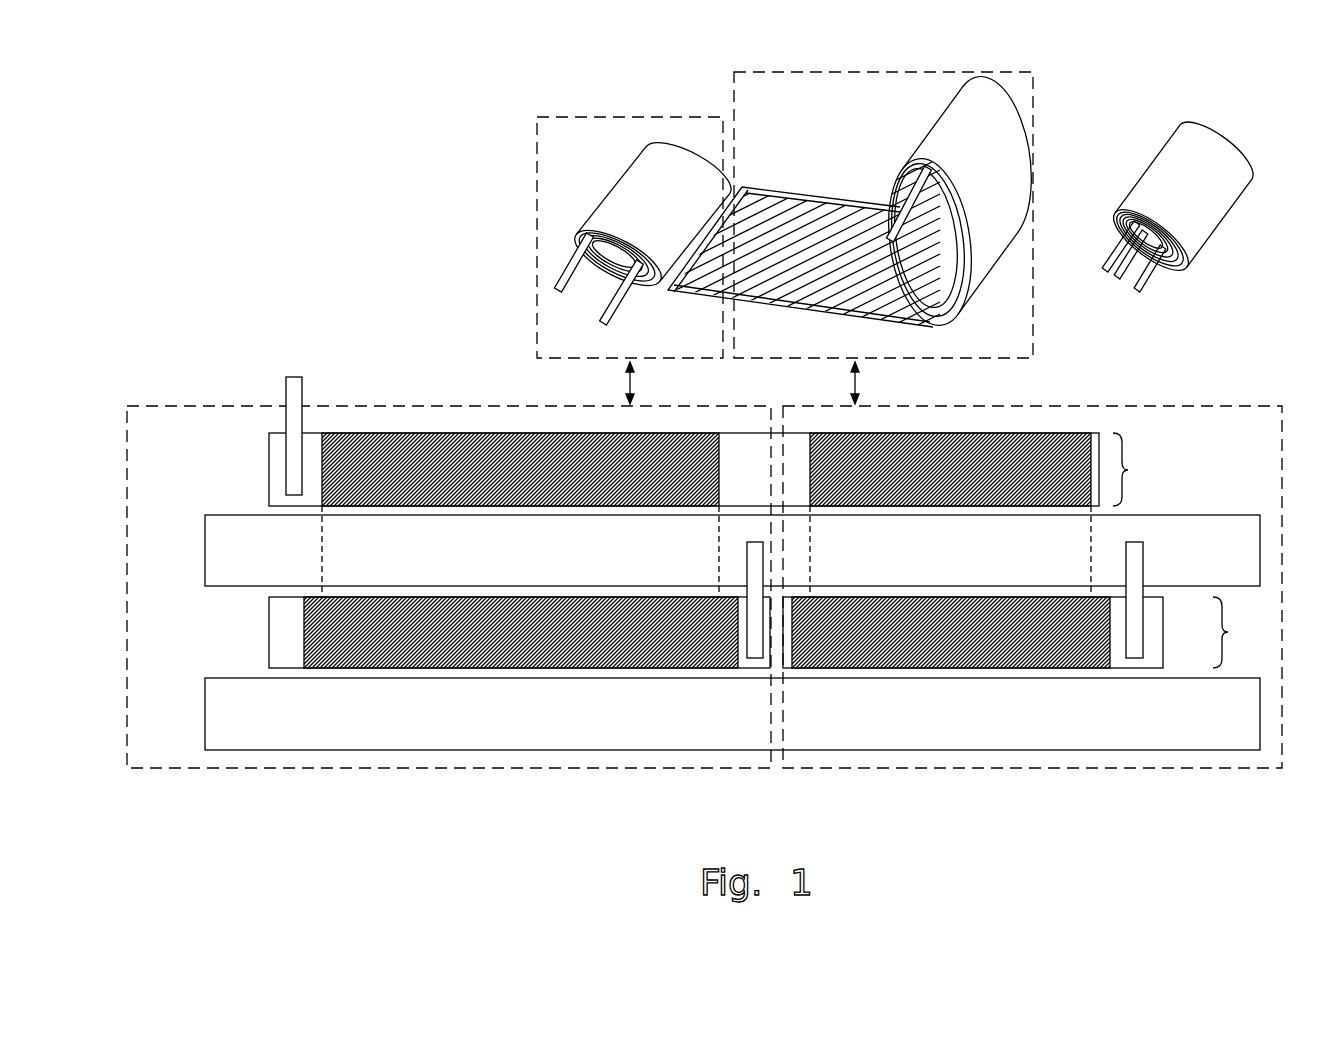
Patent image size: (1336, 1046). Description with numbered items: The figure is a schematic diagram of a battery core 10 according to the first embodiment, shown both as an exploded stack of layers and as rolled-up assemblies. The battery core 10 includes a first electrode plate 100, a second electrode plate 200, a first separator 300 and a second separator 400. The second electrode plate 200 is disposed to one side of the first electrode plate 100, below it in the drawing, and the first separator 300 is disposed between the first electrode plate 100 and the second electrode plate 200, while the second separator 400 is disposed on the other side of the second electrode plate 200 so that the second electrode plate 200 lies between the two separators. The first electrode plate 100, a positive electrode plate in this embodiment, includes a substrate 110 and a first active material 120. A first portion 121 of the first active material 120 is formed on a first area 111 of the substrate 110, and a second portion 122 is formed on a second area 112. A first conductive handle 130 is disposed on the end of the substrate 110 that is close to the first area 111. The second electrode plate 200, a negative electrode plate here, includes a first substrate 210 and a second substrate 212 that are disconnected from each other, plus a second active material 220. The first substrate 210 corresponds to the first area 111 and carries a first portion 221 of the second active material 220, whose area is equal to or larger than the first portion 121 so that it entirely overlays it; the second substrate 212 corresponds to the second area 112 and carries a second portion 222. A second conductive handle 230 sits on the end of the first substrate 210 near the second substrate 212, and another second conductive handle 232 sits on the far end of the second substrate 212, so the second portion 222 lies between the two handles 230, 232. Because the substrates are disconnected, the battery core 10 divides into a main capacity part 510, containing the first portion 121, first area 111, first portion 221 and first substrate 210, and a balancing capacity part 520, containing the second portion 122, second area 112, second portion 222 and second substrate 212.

The battery core 10 is at (1215, 203).
The first electrode plate 100 is at (675, 323).
The substrate 110 is at (277, 475).
The first area 111 is at (520, 424).
The second area 112 is at (978, 424).
The first active material 120 is at (734, 424).
The first portion of the first active material 121 is at (368, 433).
The second portion of the first active material 122 is at (1053, 433).
The first conductive handle 130 is at (295, 392).
The second electrode plate 200 is at (725, 484).
The first substrate 210 is at (277, 633).
The second substrate 212 is at (1158, 608).
The second active material 220 is at (707, 713).
The first portion of the second active material 221 is at (398, 668).
The second portion of the second active material 222 is at (905, 668).
The second conductive handle 230 is at (750, 563).
The another second conductive handle 232 is at (1130, 563).
The first separator 300 is at (225, 525).
The second separator 400 is at (225, 688).
The main capacity part 510 is at (537, 140).
The balancing capacity part 520 is at (1033, 97).